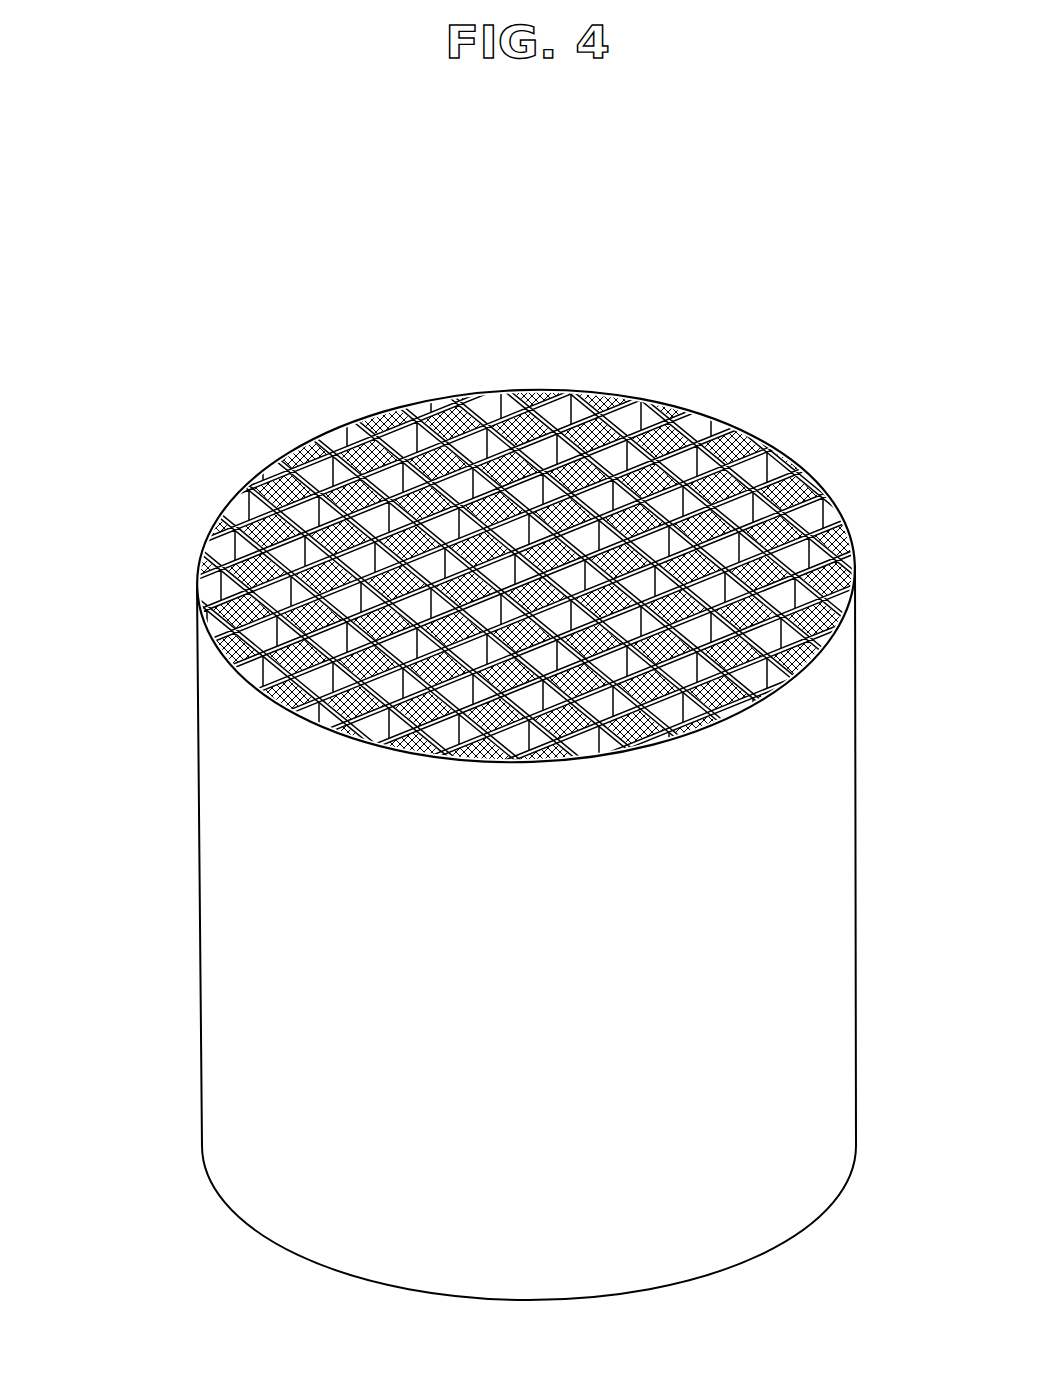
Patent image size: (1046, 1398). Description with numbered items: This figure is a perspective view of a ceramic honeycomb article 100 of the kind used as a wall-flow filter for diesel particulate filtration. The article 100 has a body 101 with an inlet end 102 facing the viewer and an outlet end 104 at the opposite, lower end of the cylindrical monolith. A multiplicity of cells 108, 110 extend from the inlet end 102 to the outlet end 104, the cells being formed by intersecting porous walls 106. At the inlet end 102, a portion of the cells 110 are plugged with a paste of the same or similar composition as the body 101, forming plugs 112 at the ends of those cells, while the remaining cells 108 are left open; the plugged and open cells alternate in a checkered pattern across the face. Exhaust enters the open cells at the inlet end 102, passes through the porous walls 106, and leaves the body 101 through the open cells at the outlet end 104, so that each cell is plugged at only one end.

The honeycomb article 100 is at (733, 397).
The body 101 is at (523, 541).
The inlet end 102 is at (783, 456).
The outlet end 104 is at (707, 1267).
The porous walls 106 is at (515, 575).
The cells 108 is at (523, 541).
The plugged cells 110 is at (248, 585).
The plugs 112 is at (452, 423).